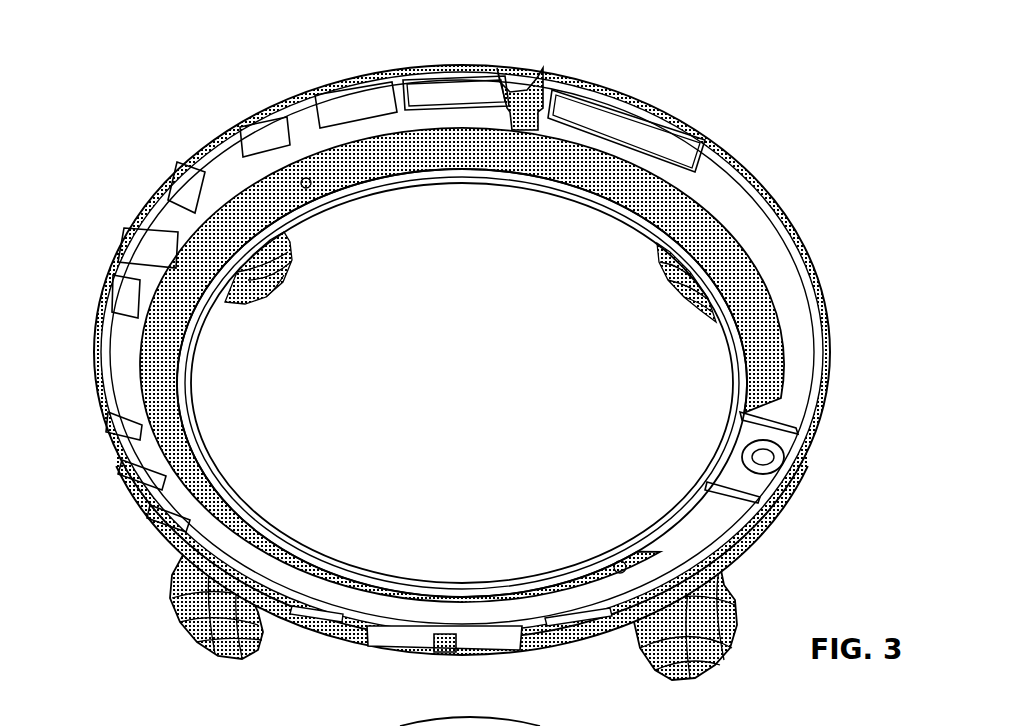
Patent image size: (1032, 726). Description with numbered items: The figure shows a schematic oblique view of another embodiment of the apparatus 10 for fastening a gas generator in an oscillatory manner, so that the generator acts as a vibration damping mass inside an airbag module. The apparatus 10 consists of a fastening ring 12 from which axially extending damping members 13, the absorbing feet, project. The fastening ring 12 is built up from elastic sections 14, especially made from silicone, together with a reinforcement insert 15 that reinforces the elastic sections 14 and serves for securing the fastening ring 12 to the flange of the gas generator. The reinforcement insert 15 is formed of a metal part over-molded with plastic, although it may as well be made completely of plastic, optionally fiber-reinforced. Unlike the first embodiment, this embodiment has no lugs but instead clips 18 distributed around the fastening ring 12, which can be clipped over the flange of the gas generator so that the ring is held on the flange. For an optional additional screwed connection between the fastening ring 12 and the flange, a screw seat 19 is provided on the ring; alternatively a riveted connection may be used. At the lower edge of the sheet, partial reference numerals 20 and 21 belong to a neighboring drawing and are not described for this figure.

The apparatus 10 is at (771, 132).
The fastening ring 12 is at (790, 222).
The damping members 13 is at (240, 652).
The elastic sections 14 is at (522, 90).
The reinforcement insert 15 is at (645, 107).
The clips 18 is at (345, 100).
The screw seat 19 is at (728, 443).
The case 20 is at (648, 725).
The case ring 21 is at (574, 725).